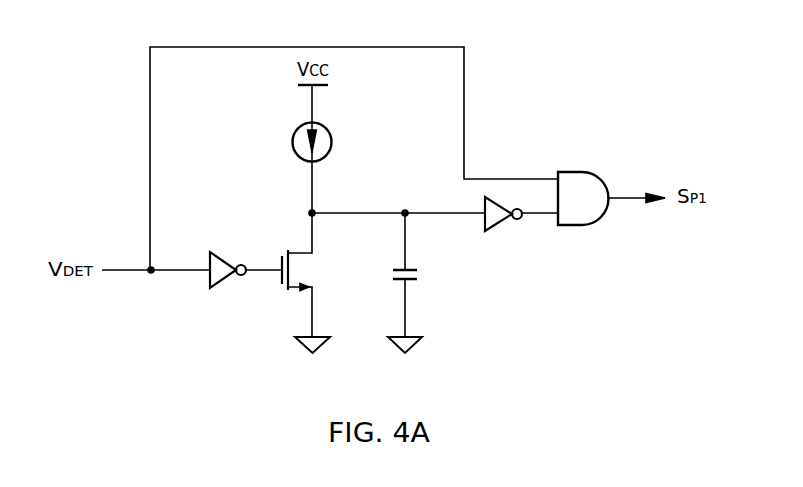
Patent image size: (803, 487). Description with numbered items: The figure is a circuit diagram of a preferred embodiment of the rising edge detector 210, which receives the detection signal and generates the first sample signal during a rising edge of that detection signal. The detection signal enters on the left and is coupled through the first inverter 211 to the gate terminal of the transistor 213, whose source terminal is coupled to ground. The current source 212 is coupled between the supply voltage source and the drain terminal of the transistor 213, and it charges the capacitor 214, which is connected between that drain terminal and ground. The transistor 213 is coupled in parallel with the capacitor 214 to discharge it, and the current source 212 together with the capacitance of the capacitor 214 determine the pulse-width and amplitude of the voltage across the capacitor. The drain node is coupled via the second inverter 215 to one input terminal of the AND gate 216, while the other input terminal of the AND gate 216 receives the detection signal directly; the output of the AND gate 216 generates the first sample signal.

The rising edge detector 210 is at (712, 42).
The first inverter 211 is at (228, 254).
The current source 212 is at (332, 149).
The transistor 213 is at (317, 283).
The capacitor 214 is at (423, 283).
The second inverter 215 is at (503, 229).
The AND gate 216 is at (611, 183).